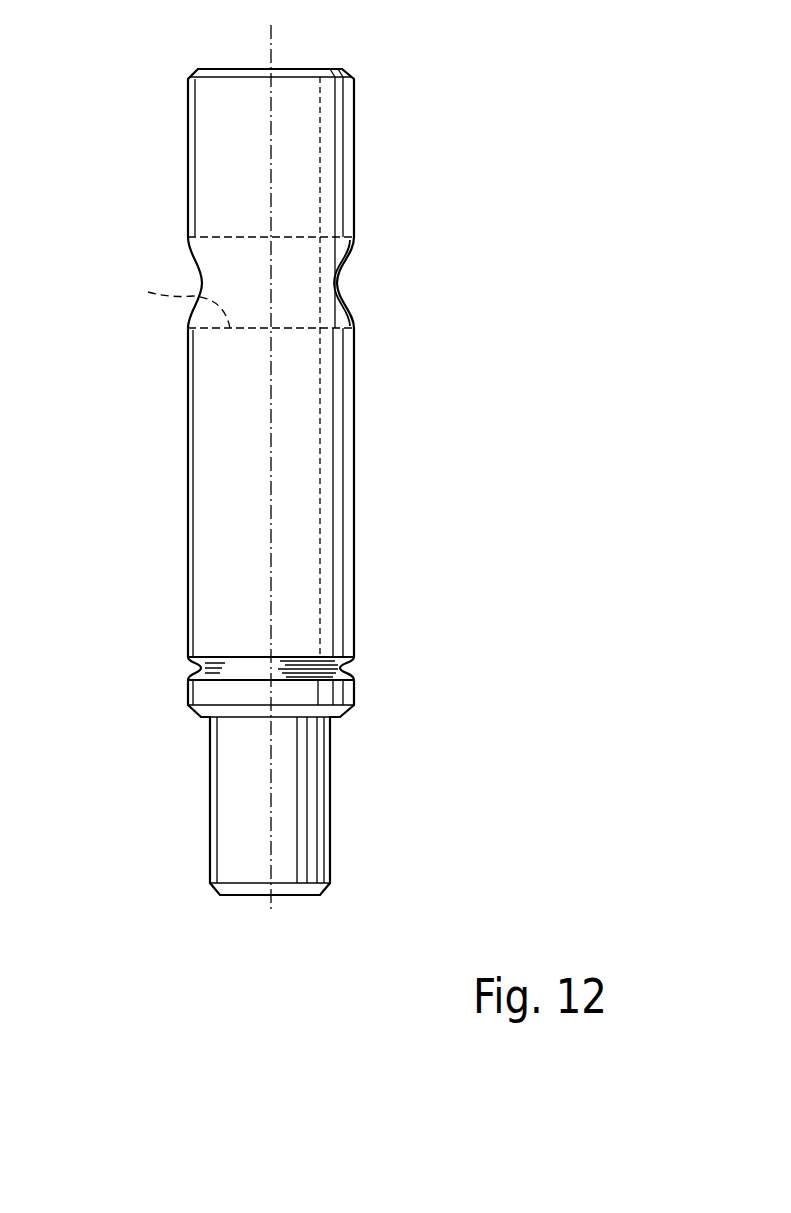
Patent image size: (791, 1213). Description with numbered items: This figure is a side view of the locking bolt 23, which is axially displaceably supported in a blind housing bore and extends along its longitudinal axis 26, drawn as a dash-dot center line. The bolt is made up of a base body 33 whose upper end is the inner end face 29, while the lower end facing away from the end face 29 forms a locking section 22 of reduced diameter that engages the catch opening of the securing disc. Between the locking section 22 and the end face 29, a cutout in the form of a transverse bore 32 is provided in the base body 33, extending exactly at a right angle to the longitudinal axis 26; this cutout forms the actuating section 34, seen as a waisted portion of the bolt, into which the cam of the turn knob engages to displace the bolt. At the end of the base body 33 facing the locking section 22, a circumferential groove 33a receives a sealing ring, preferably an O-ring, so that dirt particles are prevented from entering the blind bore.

The locking section 22 is at (230, 817).
The locking bolt 23 is at (173, 470).
The longitudinal axis 26 is at (272, 48).
The end face 29 is at (233, 88).
The transverse bore 32 is at (172, 301).
The base body 33 is at (342, 476).
The circumferential groove 33a is at (340, 670).
The actuating section 34 is at (352, 320).